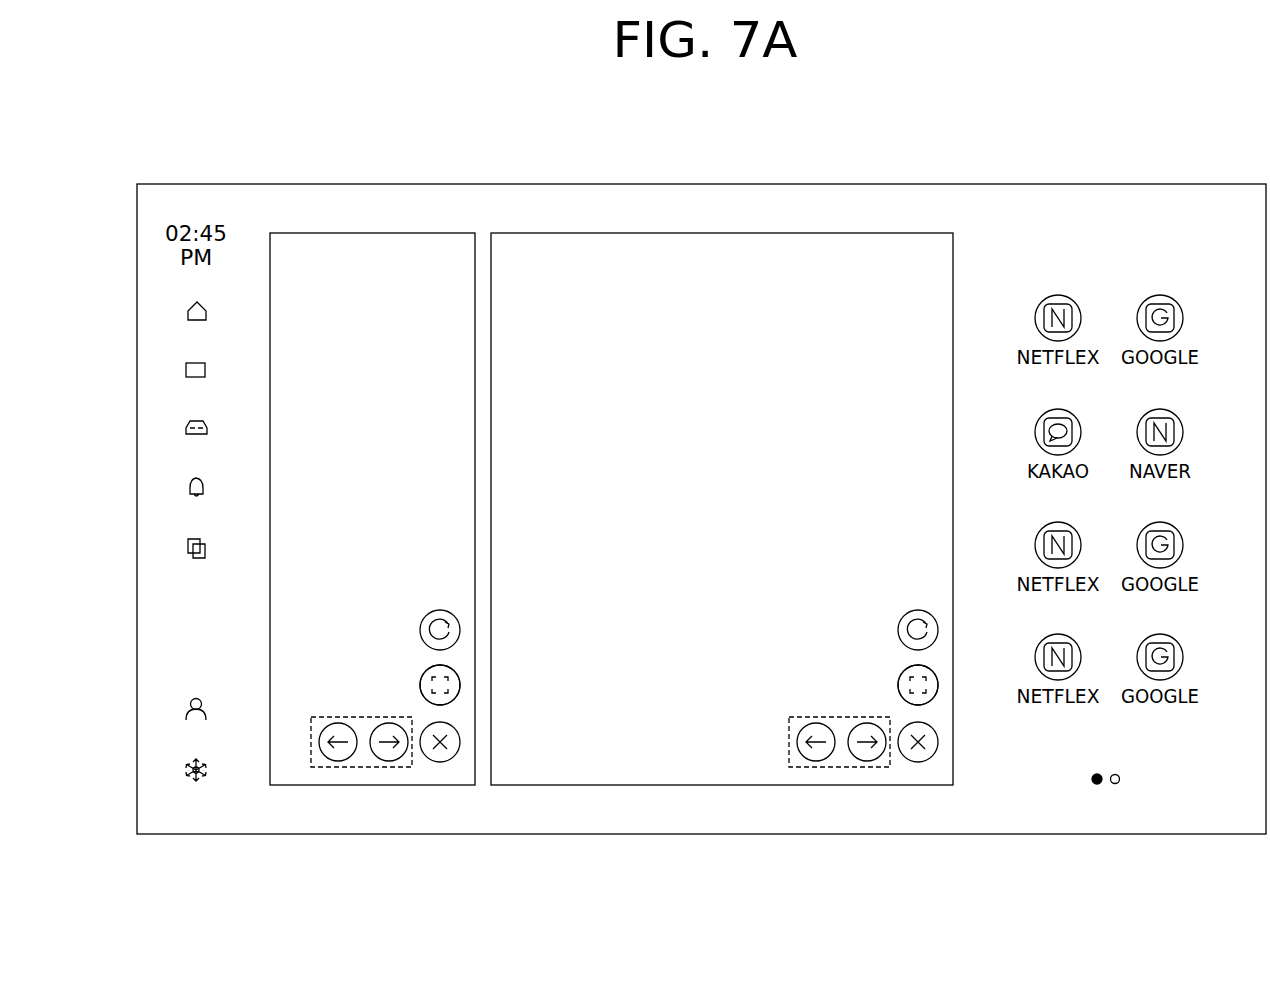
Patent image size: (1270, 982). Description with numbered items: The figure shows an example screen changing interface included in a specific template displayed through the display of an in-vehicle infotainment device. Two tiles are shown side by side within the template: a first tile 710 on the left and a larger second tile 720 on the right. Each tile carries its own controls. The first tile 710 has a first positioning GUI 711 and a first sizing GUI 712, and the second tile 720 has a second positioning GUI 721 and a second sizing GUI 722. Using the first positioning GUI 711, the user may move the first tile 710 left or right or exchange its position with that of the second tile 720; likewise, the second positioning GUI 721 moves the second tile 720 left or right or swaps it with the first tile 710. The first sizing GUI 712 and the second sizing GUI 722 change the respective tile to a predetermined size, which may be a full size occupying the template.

The first tile 710 is at (374, 501).
The first positioning GUI 711 is at (362, 767).
The first sizing GUI 712 is at (452, 697).
The second tile 720 is at (724, 500).
The second positioning GUI 721 is at (840, 767).
The second sizing GUI 722 is at (930, 697).